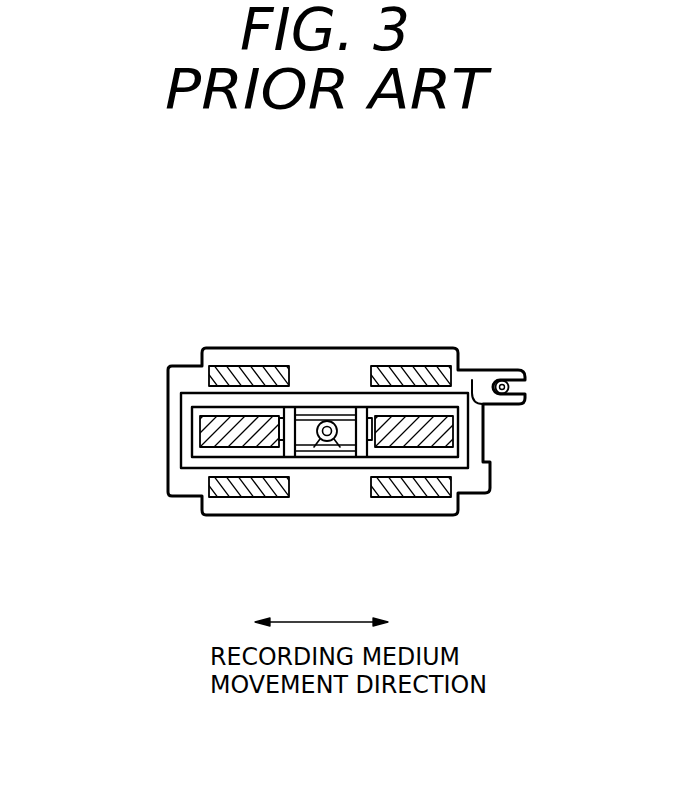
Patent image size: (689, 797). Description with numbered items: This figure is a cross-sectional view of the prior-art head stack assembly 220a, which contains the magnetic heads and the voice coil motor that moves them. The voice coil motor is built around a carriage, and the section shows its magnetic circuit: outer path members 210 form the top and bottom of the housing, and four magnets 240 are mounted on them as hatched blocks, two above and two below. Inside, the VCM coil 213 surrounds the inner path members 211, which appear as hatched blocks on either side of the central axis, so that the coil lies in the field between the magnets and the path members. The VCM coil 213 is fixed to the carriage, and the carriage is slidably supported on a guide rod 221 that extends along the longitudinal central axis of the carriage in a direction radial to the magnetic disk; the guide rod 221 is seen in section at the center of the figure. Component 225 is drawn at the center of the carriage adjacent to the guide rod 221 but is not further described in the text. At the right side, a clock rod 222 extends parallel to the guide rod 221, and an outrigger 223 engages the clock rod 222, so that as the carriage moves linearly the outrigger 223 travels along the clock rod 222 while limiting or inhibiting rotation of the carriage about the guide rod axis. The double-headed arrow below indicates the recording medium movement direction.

The head stack assembly 220a is at (301, 282).
The outer path members 210 is at (345, 348).
The magnets 240 is at (250, 372).
The VCM coil 213 is at (185, 420).
The inner path members 211 is at (215, 438).
The core laminations 225 is at (314, 456).
The guide rod 221 is at (340, 456).
The clock rod 222 is at (527, 387).
The outrigger 223 is at (515, 404).